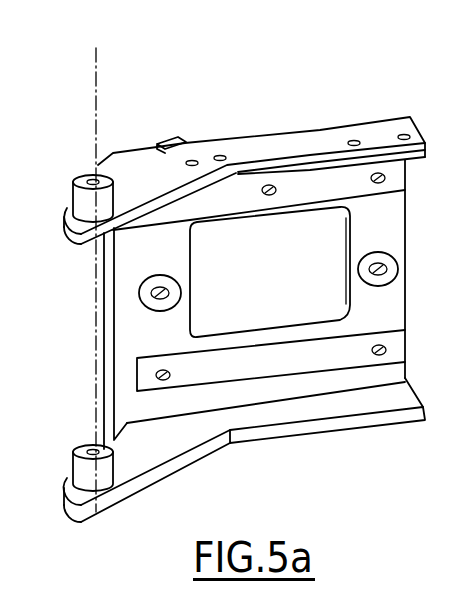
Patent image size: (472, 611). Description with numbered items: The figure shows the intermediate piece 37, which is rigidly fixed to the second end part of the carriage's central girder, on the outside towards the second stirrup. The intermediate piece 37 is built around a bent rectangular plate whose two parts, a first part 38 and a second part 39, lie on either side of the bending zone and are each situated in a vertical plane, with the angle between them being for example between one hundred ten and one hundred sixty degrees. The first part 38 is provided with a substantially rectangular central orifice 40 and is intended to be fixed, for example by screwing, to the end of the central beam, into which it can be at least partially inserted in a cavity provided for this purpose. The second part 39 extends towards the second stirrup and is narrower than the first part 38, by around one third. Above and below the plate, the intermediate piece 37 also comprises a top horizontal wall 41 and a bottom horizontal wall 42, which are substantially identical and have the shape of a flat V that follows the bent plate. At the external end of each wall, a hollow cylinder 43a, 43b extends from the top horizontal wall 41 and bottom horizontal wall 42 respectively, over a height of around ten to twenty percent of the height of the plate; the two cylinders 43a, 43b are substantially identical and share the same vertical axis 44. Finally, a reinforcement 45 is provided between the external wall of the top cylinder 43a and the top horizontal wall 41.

The intermediate piece 37 is at (287, 102).
The first part 38 is at (388, 212).
The second part 39 is at (123, 390).
The central orifice 40 is at (311, 238).
The top horizontal wall 41 is at (370, 133).
The bottom horizontal wall 42 is at (318, 407).
The top hollow cylinder 43a is at (70, 200).
The bottom hollow cylinder 43b is at (82, 475).
The vertical axis 44 is at (97, 80).
The reinforcement 45 is at (137, 180).